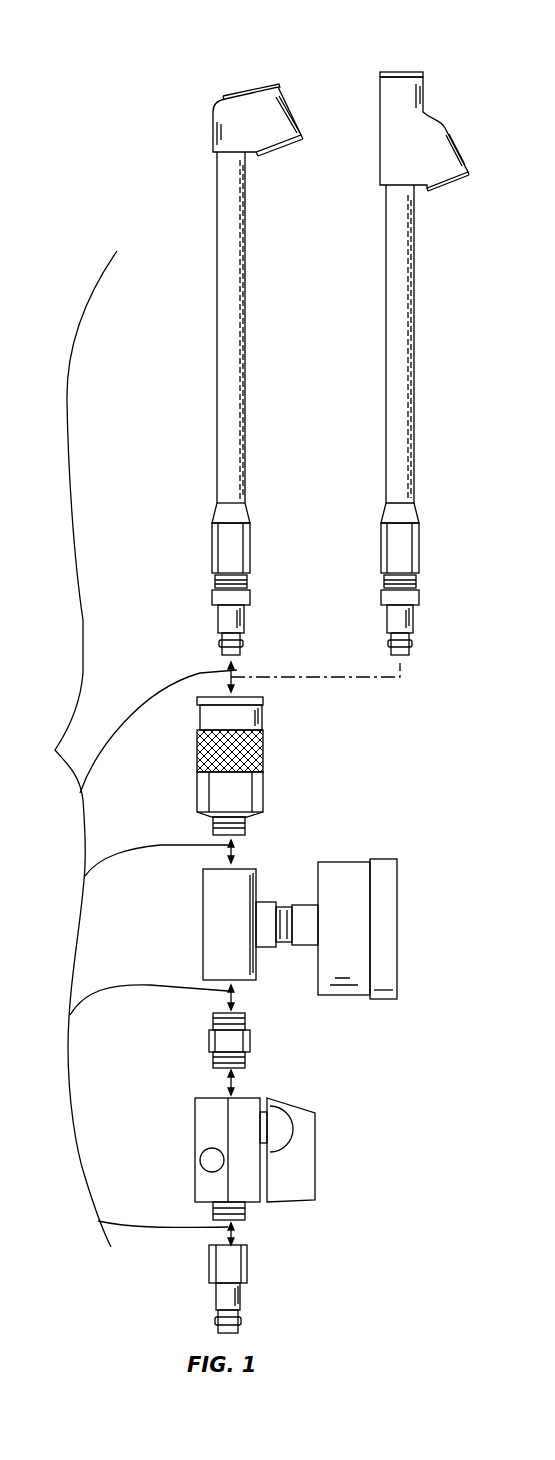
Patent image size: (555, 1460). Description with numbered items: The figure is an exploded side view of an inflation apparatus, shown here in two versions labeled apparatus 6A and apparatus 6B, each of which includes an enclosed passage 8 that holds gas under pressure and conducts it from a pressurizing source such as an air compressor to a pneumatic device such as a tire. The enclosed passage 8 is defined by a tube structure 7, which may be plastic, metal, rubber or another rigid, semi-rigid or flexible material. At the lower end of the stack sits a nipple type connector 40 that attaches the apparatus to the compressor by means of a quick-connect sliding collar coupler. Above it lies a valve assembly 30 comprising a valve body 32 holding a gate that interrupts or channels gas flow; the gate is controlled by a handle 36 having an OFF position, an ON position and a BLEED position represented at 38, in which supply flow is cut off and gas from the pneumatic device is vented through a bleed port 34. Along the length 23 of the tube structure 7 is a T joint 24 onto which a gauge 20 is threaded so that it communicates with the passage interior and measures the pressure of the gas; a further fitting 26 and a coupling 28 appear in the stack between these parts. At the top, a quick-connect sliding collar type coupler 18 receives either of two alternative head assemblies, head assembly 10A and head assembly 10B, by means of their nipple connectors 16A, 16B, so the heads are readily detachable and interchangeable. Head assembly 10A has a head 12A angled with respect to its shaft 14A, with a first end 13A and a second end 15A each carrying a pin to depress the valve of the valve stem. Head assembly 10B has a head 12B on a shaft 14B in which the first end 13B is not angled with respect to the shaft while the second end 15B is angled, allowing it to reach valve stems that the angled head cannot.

The apparatus 6A is at (216, 337).
The apparatus 6B is at (414, 334).
The tube structure 7 is at (247, 392).
The enclosed passage 8 is at (134, 749).
The head assembly 10A is at (227, 115).
The head assembly 10B is at (446, 124).
The head 12A is at (232, 128).
The head 12B is at (458, 145).
The first end 13A is at (263, 88).
The first end 13B is at (400, 72).
The shaft 14A is at (225, 253).
The shaft 14B is at (398, 335).
The second end 15A is at (278, 152).
The second end 15B is at (452, 182).
The nipple connector 16A is at (221, 616).
The nipple connector 16B is at (402, 622).
The quick-connect sliding collar type coupler 18 is at (191, 792).
The gauge 20 is at (398, 857).
The length of the tube structure 23 is at (209, 924).
The T joint 24 is at (303, 905).
The gauge housing 26 is at (341, 862).
The hex nipple coupling 28 is at (211, 1043).
The valve assembly 30 is at (241, 1142).
The valve body 32 is at (207, 1117).
The bleed port 34 is at (207, 1158).
The handle 36 is at (296, 1110).
The third position (BLEED) 38 is at (318, 1150).
The connector 40 is at (220, 1300).